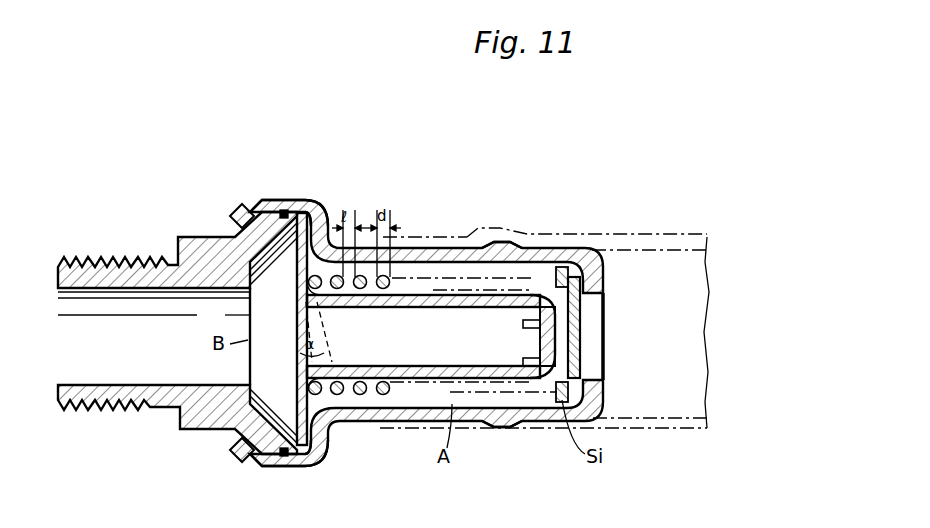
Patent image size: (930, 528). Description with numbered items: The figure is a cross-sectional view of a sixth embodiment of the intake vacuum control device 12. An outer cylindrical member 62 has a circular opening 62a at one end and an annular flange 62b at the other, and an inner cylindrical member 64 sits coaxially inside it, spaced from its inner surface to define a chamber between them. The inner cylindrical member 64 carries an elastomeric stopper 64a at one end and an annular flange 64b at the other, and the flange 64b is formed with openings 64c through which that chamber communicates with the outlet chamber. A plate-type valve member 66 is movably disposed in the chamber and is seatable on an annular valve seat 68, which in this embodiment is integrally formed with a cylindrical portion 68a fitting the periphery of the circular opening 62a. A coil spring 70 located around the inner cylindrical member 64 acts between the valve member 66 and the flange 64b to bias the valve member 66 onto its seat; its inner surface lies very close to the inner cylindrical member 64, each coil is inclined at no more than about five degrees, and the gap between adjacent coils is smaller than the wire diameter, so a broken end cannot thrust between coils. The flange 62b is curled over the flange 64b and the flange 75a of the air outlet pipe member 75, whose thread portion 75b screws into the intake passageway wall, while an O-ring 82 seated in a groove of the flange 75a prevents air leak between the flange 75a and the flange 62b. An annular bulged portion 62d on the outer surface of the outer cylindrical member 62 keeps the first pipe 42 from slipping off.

The intake vacuum control device 12 is at (482, 183).
The first pipe 42 is at (673, 237).
The outer cylindrical member 62 is at (545, 422).
The annular flange of the outer cylindrical member 62b is at (283, 199).
The circular opening 62a is at (594, 317).
The annular bulged portion 62d is at (498, 240).
The inner cylindrical member 64 is at (398, 366).
The annular flange of the inner cylindrical member 64b is at (325, 213).
The elastomeric member or stopper 64a is at (523, 333).
The openings 64c is at (298, 277).
The valve member 66 is at (560, 262).
The annular valve seat 68 is at (600, 294).
The cylindrical portion of the valve seat 68a is at (603, 380).
The coil spring 70 is at (364, 395).
The air outlet pipe member 75 is at (192, 270).
The flange of the air outlet pipe 75a is at (250, 226).
The thread portion of the air outlet pipe 75b is at (89, 410).
The O-ring 82 is at (283, 458).